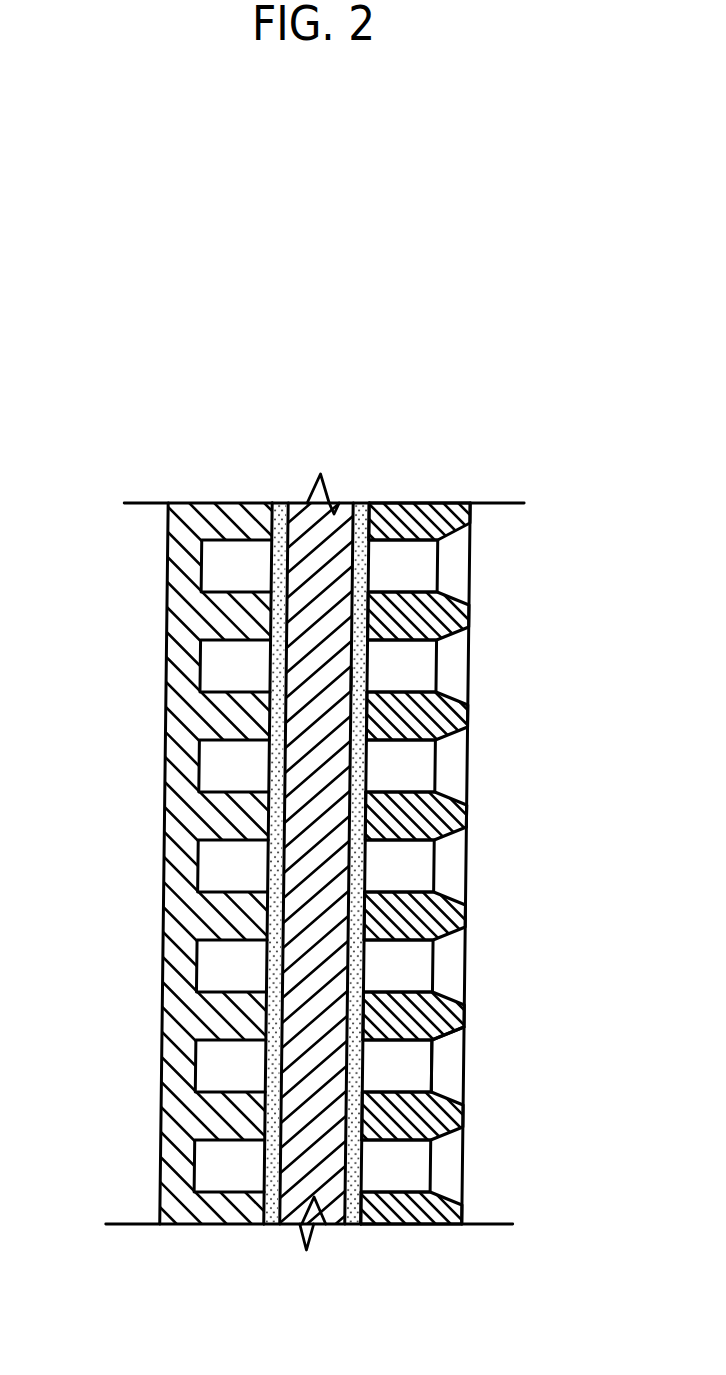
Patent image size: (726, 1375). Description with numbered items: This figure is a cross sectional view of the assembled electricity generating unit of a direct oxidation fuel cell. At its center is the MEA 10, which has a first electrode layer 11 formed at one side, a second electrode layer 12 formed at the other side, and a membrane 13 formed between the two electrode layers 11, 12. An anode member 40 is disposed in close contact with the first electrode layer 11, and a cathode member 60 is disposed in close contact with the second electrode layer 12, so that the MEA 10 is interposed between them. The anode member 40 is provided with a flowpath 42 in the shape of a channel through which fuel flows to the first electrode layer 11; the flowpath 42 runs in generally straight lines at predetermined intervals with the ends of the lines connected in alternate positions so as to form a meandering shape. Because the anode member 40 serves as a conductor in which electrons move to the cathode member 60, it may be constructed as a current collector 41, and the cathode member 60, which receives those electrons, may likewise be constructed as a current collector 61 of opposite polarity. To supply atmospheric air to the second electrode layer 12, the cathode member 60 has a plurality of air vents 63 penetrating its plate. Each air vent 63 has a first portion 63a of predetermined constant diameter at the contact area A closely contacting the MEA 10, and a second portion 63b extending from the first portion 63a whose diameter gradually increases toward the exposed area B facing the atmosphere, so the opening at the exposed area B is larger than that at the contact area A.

The MEA 10 is at (387, 1318).
The first electrode layer 11 is at (268, 1226).
The second electrode layer 12 is at (357, 1226).
The membrane 13 is at (330, 1226).
The anode member 40 is at (137, 880).
The current collector 41 is at (173, 983).
The flowpath 42 is at (211, 657).
The cathode member 60 is at (487, 917).
The current collector 61 is at (458, 1110).
The air vent 63 is at (472, 766).
The first portion 63a is at (395, 1043).
The second portion 63b is at (466, 1045).
The contact area (first surface) A is at (352, 677).
The exposed area (second surface) B is at (468, 817).